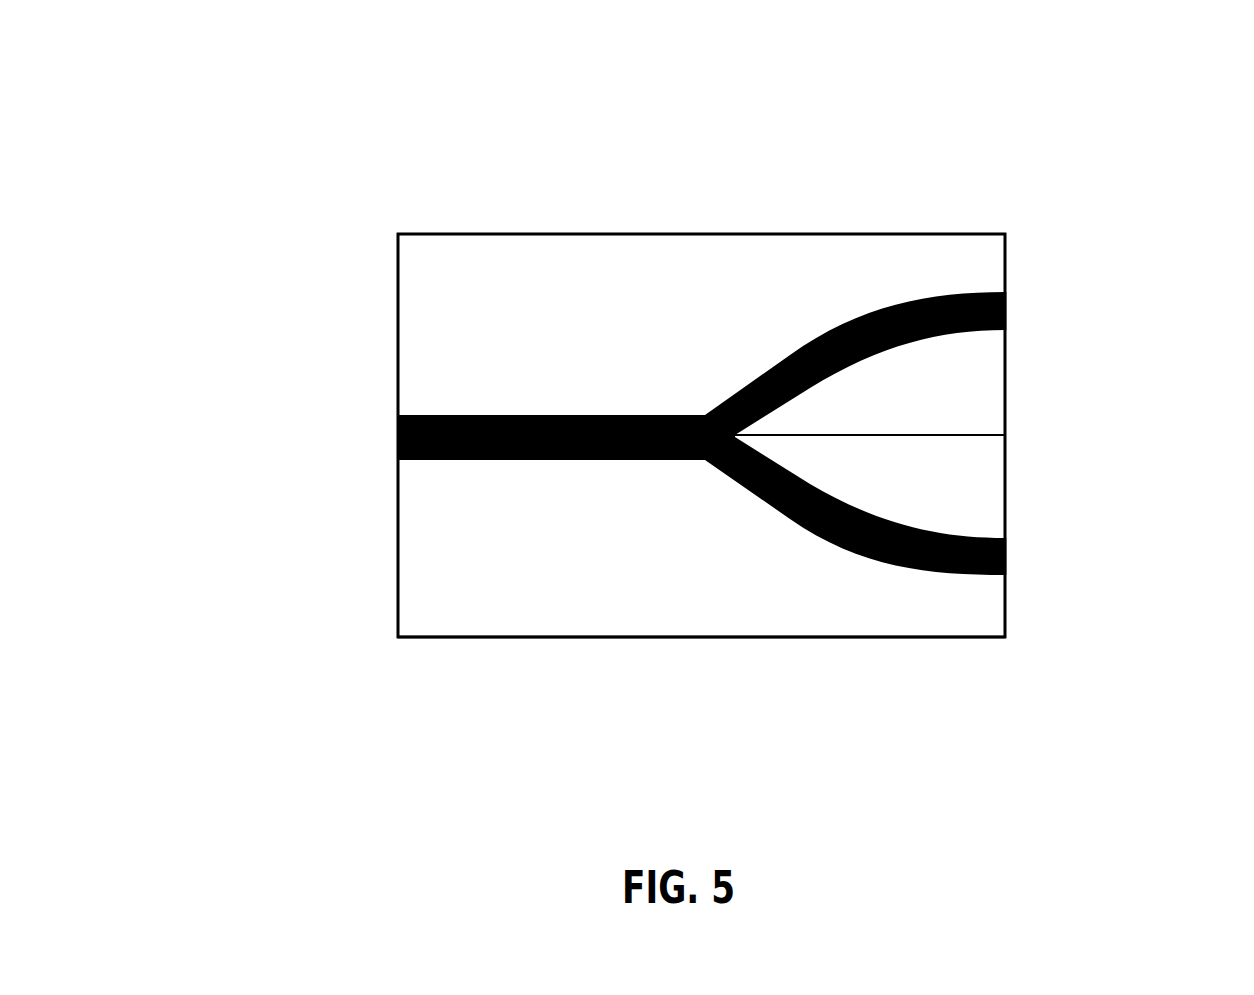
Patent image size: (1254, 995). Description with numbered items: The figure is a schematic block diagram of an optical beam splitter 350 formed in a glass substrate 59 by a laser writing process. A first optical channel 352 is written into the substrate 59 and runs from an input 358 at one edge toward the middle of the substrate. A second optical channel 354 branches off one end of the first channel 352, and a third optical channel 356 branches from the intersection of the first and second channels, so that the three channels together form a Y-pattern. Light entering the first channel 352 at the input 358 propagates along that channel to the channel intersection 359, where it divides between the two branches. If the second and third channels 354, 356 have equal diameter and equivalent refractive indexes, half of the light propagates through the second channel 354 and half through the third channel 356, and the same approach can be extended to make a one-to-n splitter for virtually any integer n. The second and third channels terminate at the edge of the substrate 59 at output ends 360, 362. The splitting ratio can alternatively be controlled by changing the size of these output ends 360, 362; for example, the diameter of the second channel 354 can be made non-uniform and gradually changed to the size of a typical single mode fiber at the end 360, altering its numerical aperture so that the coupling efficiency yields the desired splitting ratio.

The optical beam splitter 350 is at (1080, 136).
The first optical channel 352 is at (462, 462).
The glass substrate 59 is at (508, 585).
The input 358 is at (398, 438).
The channel intersection 359 is at (703, 415).
The second optical channel 354 is at (836, 318).
The third optical channel 356 is at (863, 558).
The first channel output end 360 is at (1005, 307).
The second channel output end 362 is at (1005, 556).